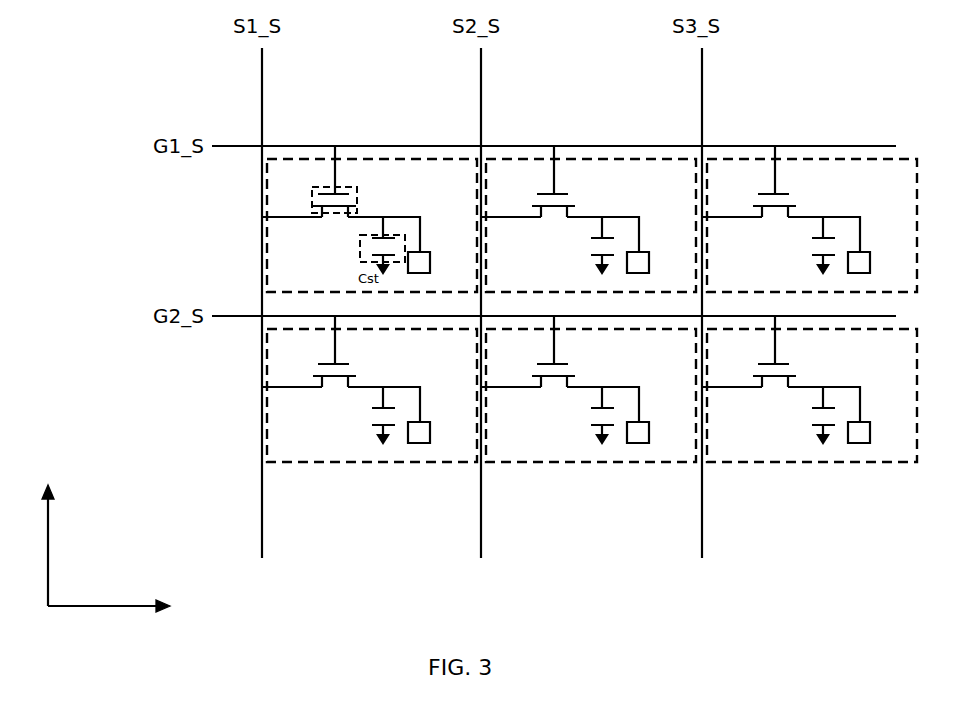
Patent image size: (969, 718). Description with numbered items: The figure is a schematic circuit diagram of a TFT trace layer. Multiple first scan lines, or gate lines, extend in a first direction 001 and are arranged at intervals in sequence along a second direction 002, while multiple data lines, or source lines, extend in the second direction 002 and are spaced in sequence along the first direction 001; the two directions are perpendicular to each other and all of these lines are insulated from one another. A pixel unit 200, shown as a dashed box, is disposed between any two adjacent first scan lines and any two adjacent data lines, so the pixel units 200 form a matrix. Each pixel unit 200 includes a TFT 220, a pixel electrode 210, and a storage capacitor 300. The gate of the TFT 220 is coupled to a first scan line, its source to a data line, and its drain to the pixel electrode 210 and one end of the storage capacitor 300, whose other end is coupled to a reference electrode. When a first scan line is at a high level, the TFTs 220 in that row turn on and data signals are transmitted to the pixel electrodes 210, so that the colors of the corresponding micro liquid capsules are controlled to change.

The pixel unit 200 is at (369, 190).
The TFT 220 is at (372, 181).
The pixel electrode 210 is at (441, 239).
The storage capacitor 300 is at (349, 252).
The first direction 001 is at (109, 621).
The second direction 002 is at (30, 545).